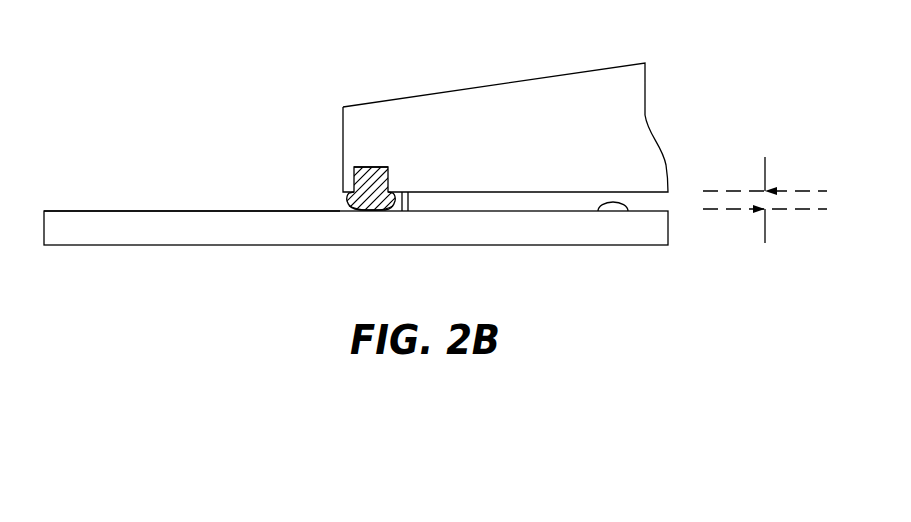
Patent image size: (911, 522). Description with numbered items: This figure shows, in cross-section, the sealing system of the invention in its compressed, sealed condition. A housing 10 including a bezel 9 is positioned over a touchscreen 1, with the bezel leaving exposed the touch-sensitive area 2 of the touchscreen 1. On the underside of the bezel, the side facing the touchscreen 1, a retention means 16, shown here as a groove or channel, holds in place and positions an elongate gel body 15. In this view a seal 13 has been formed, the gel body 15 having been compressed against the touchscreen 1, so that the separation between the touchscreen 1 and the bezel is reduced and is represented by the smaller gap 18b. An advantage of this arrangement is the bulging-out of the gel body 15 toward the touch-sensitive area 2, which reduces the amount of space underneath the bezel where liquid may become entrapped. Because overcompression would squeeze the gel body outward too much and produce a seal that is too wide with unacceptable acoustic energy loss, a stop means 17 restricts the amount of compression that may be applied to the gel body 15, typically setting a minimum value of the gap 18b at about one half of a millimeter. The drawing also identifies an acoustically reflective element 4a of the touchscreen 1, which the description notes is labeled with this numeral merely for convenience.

The touchscreen 1 is at (230, 238).
The touch-sensitive area 2 is at (108, 211).
The acoustically reflective element 4a is at (613, 205).
The bezel 9 is at (505, 86).
The housing 10 is at (360, 117).
The seal 13 is at (372, 210).
The gel body 15 is at (372, 187).
The retention means 16 is at (372, 167).
The stop means 17 is at (407, 211).
The gap 18b is at (828, 202).